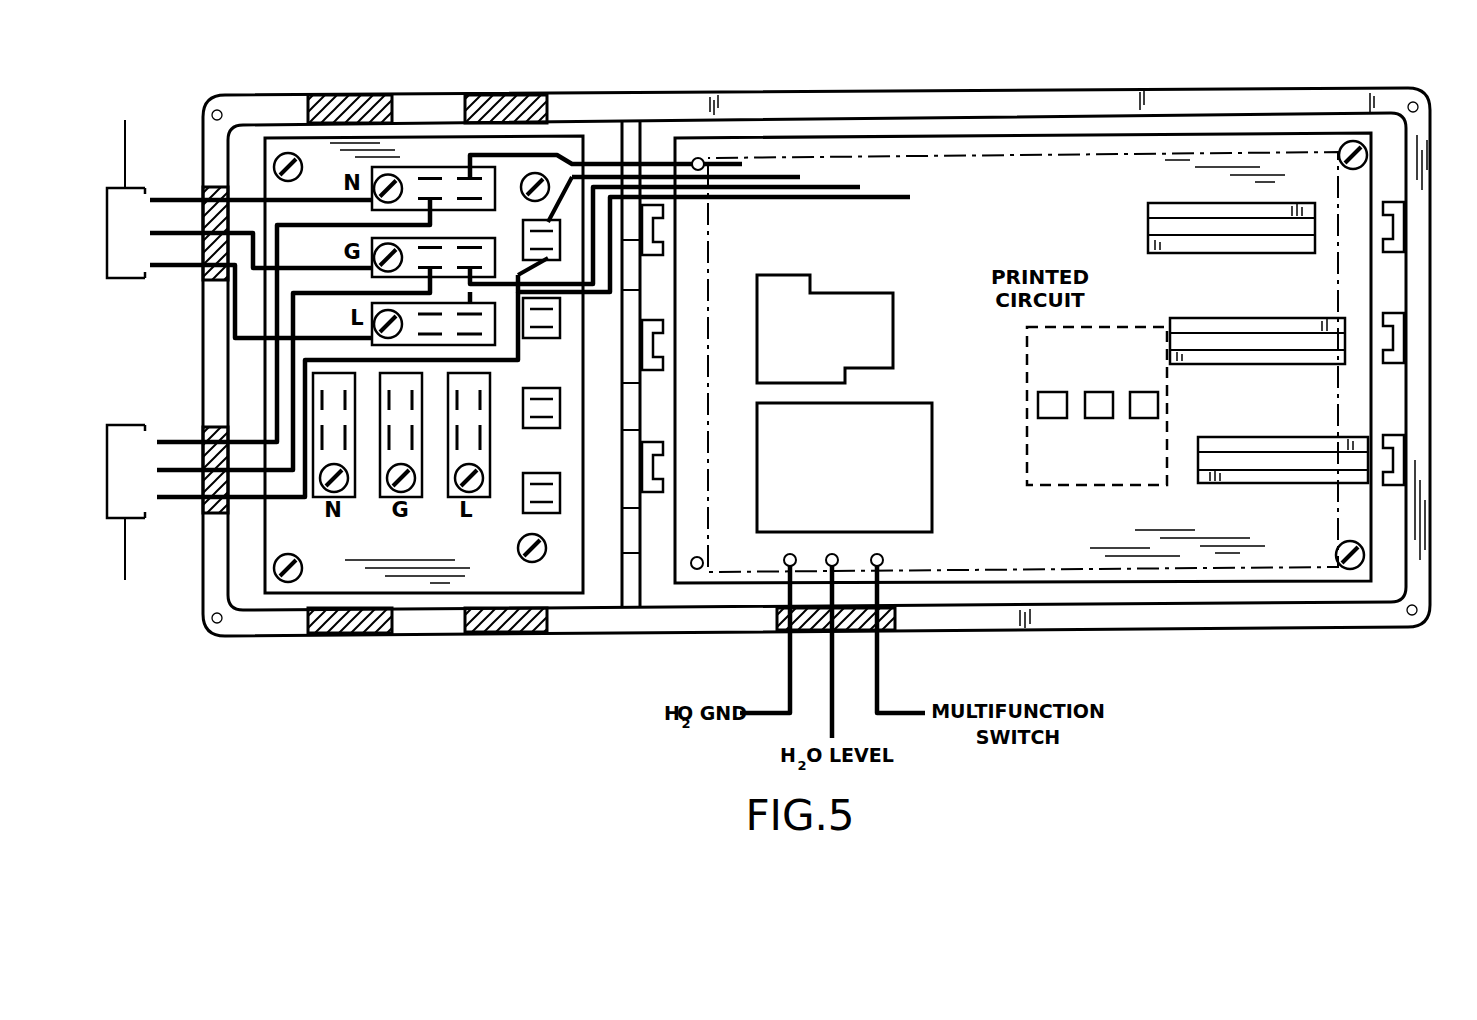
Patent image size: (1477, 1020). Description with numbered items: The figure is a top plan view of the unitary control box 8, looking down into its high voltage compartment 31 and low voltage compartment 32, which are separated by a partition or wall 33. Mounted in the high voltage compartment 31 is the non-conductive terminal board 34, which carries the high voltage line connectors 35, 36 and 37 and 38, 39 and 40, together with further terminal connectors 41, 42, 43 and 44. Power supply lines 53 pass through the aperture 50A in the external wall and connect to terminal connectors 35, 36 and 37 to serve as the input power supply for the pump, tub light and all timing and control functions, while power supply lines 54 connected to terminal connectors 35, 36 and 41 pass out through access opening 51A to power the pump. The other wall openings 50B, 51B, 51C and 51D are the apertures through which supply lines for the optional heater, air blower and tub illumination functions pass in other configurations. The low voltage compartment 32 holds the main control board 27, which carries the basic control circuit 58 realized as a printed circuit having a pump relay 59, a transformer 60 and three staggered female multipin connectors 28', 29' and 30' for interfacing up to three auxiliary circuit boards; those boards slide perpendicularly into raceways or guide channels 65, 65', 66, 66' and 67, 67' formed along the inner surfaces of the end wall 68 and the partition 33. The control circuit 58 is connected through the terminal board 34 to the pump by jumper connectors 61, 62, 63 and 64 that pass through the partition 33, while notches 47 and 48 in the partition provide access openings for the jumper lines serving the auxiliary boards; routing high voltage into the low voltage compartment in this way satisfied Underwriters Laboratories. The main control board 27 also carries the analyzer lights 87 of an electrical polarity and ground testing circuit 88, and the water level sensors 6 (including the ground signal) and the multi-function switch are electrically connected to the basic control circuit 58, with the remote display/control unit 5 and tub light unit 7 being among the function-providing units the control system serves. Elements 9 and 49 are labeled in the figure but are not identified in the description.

The remote display/control unit 5 is at (441, 188).
The water level sensor 6 is at (441, 256).
The tub light unit 7 is at (441, 323).
The unitary control box 8 is at (1086, 90).
The terminal 9 is at (366, 368).
The main control board 27 is at (1096, 578).
The female multipin connector 28' is at (1234, 240).
The female multipin connector 29' is at (1257, 359).
The female multipin connector 30' is at (1283, 478).
The high voltage compartment 31 is at (246, 598).
The low voltage compartment 32 is at (1390, 142).
The partition wall 33 is at (633, 125).
The terminal board 34 is at (410, 585).
The terminal connector 35 is at (370, 165).
The terminal connector 36 is at (372, 238).
The terminal connector 37 is at (372, 303).
The terminal connector 38 is at (355, 495).
The terminal connector 39 is at (420, 495).
The terminal connector 40 is at (488, 497).
The terminal connector 41 is at (565, 240).
The terminal connector 42 is at (565, 318).
The terminal connector 43 is at (565, 408).
The terminal connector 44 is at (565, 493).
The access opening 47 is at (622, 410).
The access opening 48 is at (640, 540).
The hinge leaf 49 is at (614, 148).
The aperture 50A is at (203, 205).
The aperture 50B is at (355, 633).
The access opening 51A is at (203, 428).
The access opening 51B is at (510, 632).
The access opening 51C is at (493, 95).
The access opening 51D is at (352, 95).
The power supply lines 53 is at (197, 272).
The power supply lines 54 is at (124, 535).
The main control circuit 58 is at (1120, 156).
The pump relay 59 is at (850, 293).
The transformer 60 is at (895, 404).
The jumper connector 61 is at (742, 162).
The jumper connector 62 is at (794, 176).
The jumper connector 63 is at (862, 186).
The jumper connector 64 is at (908, 197).
The guide channel 65 is at (1009, 346).
The guide channel 65' is at (1362, 205).
The guide channel 66 is at (696, 368).
The guide channel 66' is at (1360, 321).
The guide channel 67 is at (696, 458).
The guide channel 67' is at (1362, 443).
The end wall 68 is at (1412, 530).
The analyzer lights 87 is at (1140, 392).
The electrical polarity and ground testing circuit 88 is at (1077, 412).